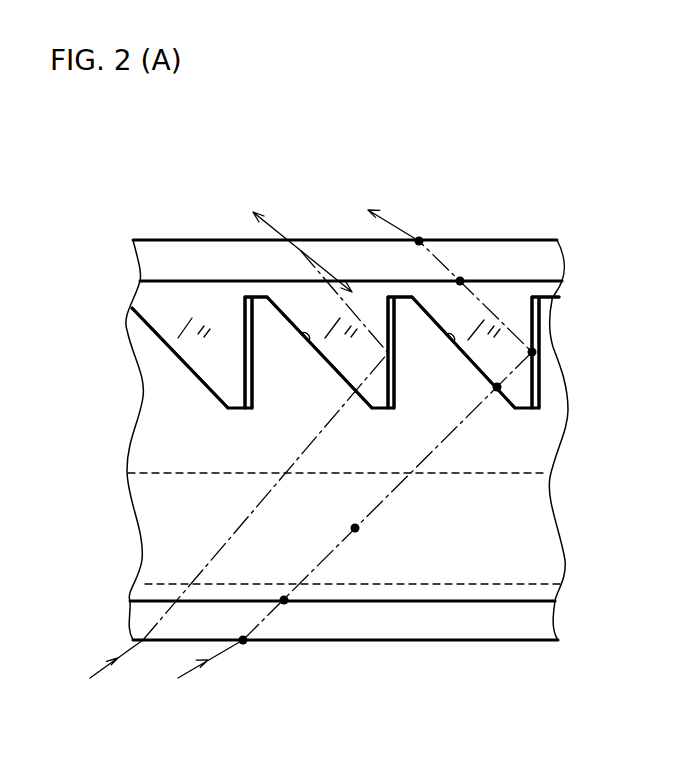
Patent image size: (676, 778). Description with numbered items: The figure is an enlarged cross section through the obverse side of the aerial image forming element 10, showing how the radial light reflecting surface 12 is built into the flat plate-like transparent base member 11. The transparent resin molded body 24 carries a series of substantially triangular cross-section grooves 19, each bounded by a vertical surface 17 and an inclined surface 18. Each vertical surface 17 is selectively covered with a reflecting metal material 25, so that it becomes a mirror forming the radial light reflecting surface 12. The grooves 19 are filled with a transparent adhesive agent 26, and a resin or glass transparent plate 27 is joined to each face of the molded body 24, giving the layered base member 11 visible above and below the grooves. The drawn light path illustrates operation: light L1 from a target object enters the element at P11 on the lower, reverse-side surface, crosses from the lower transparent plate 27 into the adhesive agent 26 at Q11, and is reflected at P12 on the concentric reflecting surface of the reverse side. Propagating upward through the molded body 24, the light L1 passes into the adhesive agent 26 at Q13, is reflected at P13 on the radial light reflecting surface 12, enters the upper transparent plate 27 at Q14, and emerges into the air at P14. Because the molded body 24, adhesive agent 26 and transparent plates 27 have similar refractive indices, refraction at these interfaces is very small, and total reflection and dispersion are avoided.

The aerial image forming element 10 is at (541, 156).
The transparent base member 11 is at (567, 349).
The radial light reflecting surface 12 is at (247, 318).
The vertical surface 17 is at (241, 300).
The inclined surface 18 is at (157, 327).
The groove 19 is at (188, 310).
The molded body 24 is at (157, 458).
The reflecting metal material 25 is at (247, 347).
The transparent adhesive agent 26 is at (350, 292).
The transparent plate 27 is at (552, 262).
The entry point P11 is at (243, 640).
The interface point Q11 is at (284, 601).
The reflection point P12 is at (357, 530).
The interface point Q13 is at (497, 387).
The reflection point P13 is at (532, 352).
The interface point Q14 is at (460, 281).
The exit point P14 is at (419, 241).
The light L1 is at (239, 485).